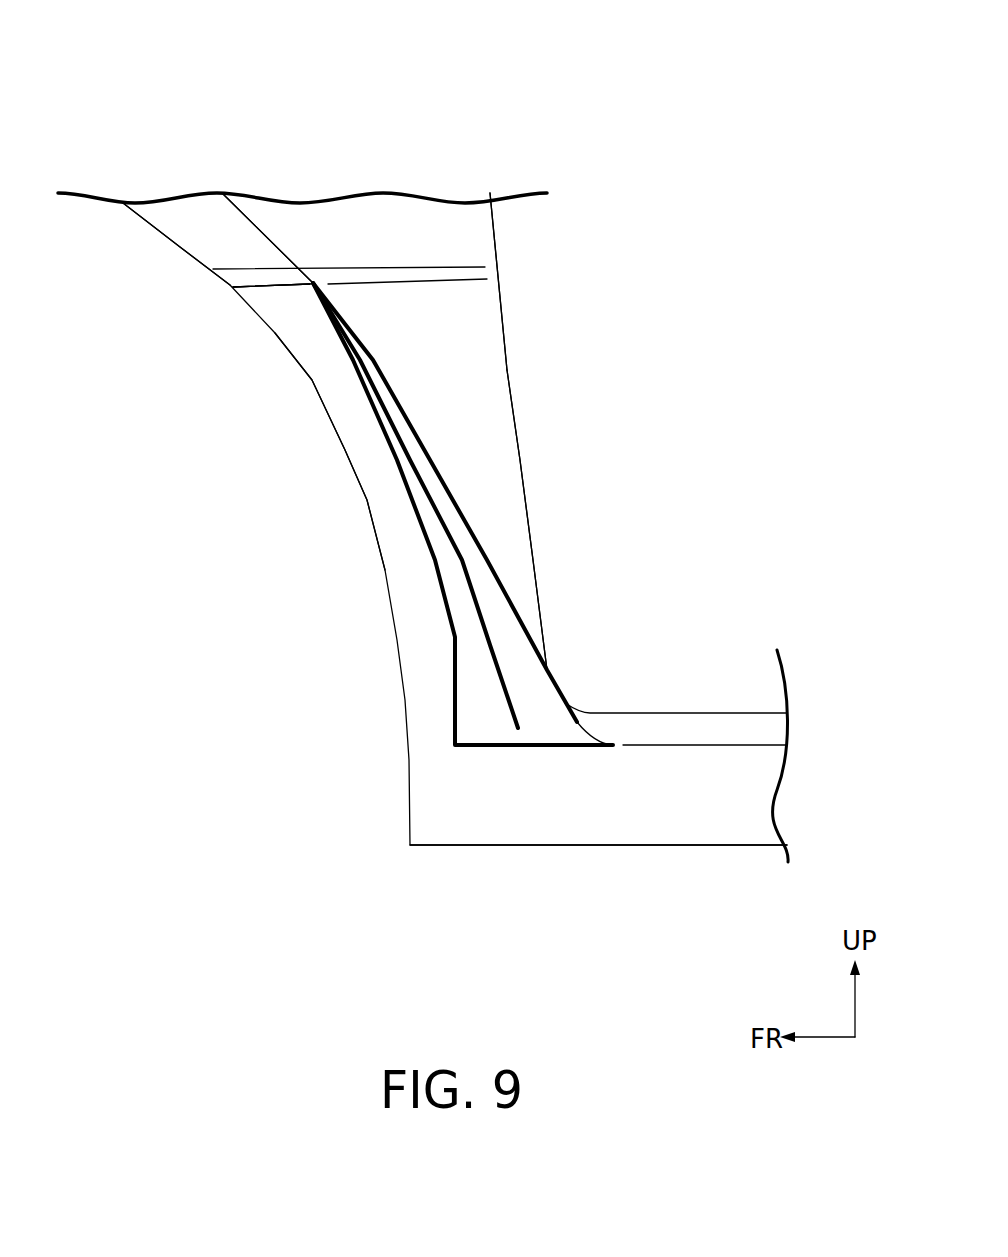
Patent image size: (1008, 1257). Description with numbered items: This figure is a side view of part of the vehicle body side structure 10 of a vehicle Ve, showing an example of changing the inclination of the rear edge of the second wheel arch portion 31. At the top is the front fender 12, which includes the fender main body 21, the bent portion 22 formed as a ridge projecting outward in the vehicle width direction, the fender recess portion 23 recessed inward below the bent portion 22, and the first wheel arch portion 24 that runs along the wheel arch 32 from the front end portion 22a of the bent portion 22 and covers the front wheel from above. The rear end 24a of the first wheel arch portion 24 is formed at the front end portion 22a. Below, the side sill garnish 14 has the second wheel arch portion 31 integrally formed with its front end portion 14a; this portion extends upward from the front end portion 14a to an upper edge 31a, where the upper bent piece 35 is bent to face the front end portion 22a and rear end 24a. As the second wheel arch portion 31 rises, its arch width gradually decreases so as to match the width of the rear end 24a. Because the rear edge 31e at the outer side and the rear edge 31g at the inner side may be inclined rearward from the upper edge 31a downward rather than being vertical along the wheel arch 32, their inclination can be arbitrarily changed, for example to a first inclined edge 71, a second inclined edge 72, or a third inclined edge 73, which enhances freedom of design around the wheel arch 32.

The vehicle Ve is at (268, 112).
The vehicle body side structure 10 is at (408, 143).
The front fender 12 is at (505, 230).
The side sill garnish 14 is at (693, 685).
The front end portion 14a is at (538, 807).
The fender main body 21 is at (475, 243).
The bent portion 22 is at (405, 269).
The front end portion 22a is at (220, 348).
The rear end 24a is at (260, 278).
The fender recess portion 23 is at (478, 423).
The first wheel arch portion 24 is at (193, 217).
The second wheel arch portion 31 is at (372, 580).
The upper edge 31a is at (267, 352).
The upper bent piece 35 is at (273, 295).
The wheel arch 32 is at (363, 502).
The first inclined edge 71 is at (558, 514).
The rear edge 31e is at (558, 514).
The rear edge 31g is at (460, 505).
The second inclined edge 72 is at (468, 575).
The third inclined edge 73 is at (452, 633).